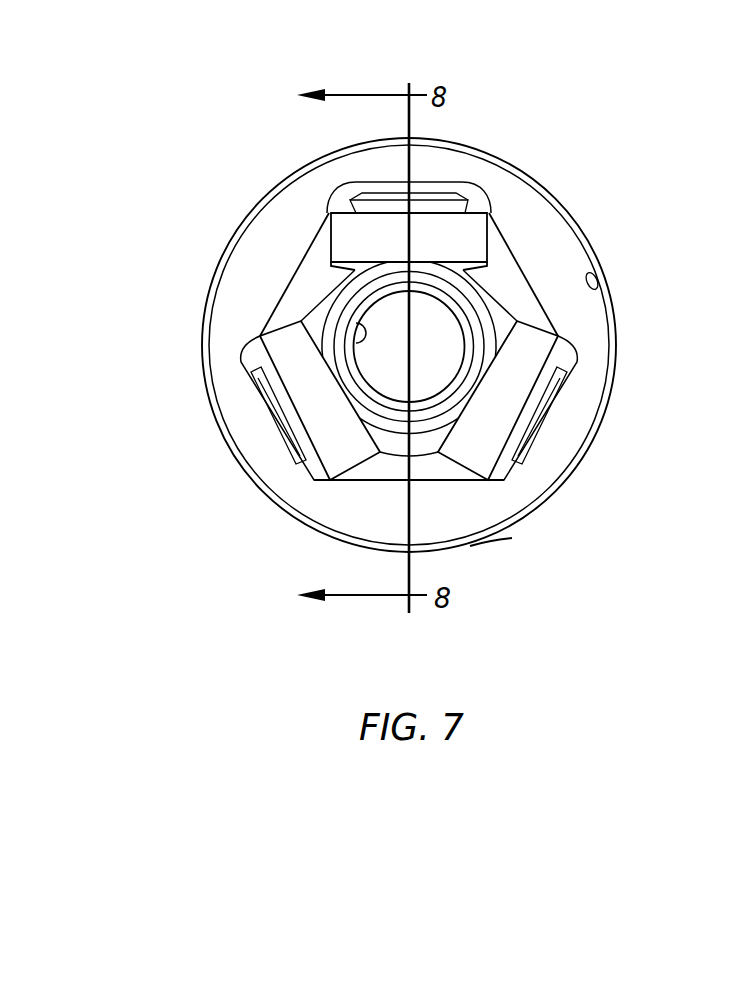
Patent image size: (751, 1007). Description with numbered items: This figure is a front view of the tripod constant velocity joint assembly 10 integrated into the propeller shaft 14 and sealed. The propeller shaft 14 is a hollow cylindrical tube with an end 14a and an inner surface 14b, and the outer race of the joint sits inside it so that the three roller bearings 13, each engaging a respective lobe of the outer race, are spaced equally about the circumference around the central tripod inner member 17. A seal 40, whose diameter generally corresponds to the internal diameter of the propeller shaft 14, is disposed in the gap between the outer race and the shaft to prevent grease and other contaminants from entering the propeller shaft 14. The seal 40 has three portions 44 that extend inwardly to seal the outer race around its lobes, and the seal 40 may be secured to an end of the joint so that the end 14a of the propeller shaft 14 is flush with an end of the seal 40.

The tripod constant velocity joint assembly 10 is at (577, 140).
The roller bearings 13 is at (445, 252).
The propeller shaft 14 is at (572, 485).
The end of propeller shaft 14a is at (497, 536).
The inner surface of propeller shaft 14b is at (598, 289).
The tripod inner member 17 is at (358, 344).
The seal 40 is at (547, 235).
The inwardly extending portions of seal 44 is at (258, 298).